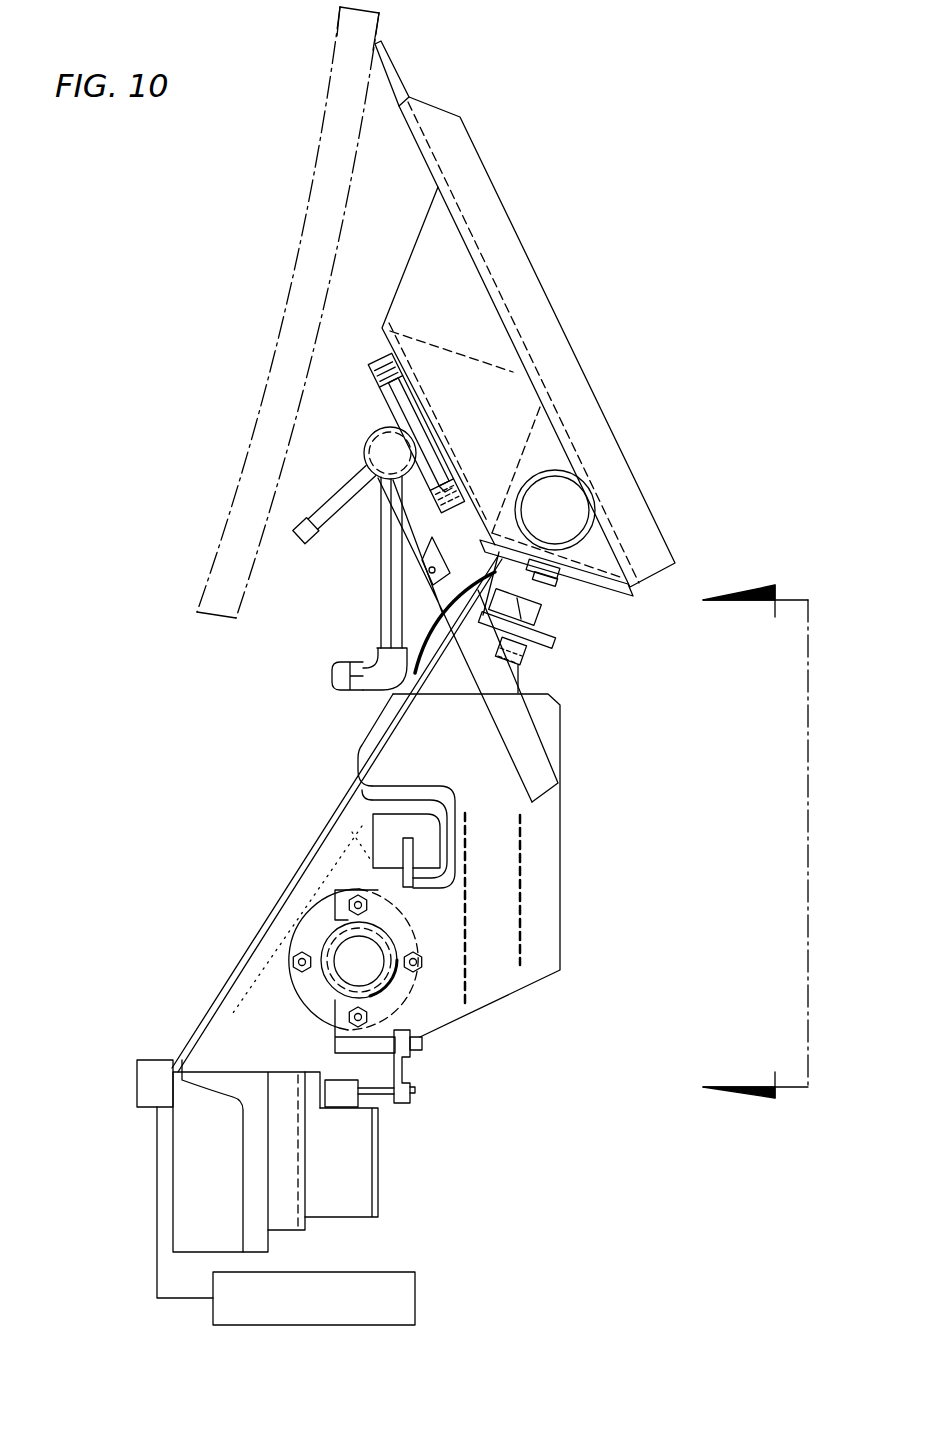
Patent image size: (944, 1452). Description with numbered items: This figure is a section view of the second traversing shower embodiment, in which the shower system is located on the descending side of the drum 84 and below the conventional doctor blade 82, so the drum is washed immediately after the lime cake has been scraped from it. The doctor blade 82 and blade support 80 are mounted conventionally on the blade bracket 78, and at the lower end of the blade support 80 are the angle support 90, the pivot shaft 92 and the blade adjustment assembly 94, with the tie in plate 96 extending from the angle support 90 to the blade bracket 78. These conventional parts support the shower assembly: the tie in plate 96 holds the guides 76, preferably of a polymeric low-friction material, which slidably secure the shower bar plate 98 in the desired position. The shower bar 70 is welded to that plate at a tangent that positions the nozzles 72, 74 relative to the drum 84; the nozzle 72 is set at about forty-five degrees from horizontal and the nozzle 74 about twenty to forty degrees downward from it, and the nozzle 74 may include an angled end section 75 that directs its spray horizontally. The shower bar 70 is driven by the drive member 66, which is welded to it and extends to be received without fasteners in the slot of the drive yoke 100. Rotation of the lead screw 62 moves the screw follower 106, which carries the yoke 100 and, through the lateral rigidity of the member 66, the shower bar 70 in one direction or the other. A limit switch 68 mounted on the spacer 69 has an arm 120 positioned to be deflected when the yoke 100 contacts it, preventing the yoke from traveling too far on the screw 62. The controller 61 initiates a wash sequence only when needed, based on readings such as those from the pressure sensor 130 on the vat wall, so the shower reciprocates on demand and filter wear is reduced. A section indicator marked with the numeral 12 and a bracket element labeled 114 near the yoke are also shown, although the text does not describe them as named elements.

The section line 12- 12 is at (753, 847).
The controller 61 is at (418, 1285).
The lead screw 62 is at (373, 973).
The drive member 66 is at (415, 538).
The limit switch 68 is at (360, 1193).
The spacer 69 is at (200, 1113).
The shower bar 70 is at (373, 427).
The nozzle 72 is at (328, 495).
The nozzle 74 is at (380, 583).
The angled end section 75 is at (360, 693).
The guides 76 is at (387, 357).
The blade bracket 78 is at (428, 260).
The blade support 80 is at (503, 240).
The doctor blade 82 is at (393, 68).
The drum 84 is at (317, 213).
The angle support 90 is at (600, 585).
The pivot shaft 92 is at (567, 497).
The blade adjustment assembly 94 is at (545, 640).
The tie in plate 96 is at (425, 388).
The shower bar plate 98 is at (430, 450).
The drive yoke 100 is at (538, 937).
The screw follower 106 is at (332, 938).
The channel bracket 114 is at (390, 827).
The arm 120 is at (410, 1073).
The sensor 130 is at (137, 1076).